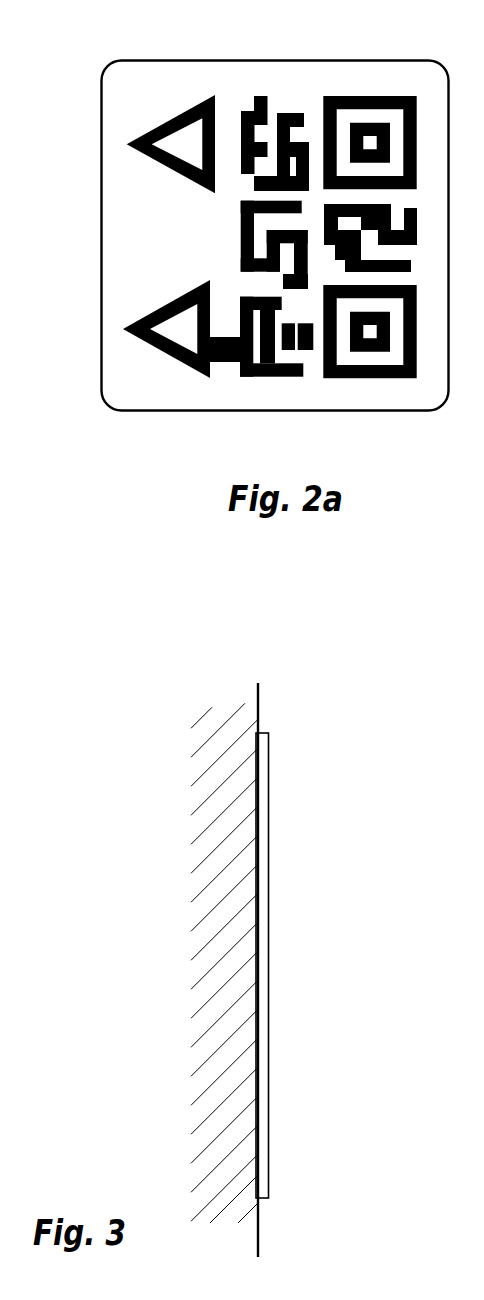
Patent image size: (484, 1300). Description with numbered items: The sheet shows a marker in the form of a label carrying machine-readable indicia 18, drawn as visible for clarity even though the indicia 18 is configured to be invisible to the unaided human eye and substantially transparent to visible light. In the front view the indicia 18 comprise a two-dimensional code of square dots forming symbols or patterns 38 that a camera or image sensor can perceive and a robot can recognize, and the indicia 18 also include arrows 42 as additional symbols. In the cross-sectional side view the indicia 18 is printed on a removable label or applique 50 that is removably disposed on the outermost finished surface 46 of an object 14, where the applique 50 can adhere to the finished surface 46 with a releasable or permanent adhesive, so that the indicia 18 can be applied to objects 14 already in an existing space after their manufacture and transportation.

In FIG. 3, the object 14 is at (210, 745).
In FIG. 2A, the indicia 18 is at (180, 430).
In FIG. 3, the indicia 18 is at (262, 805).
In FIG. 2A, the symbols or patterns 38 is at (366, 96).
In FIG. 2A, the arrows 42 is at (167, 117).
In FIG. 3, the finished surface 46 is at (259, 703).
In FIG. 2A, the applique 50 is at (102, 247).
In FIG. 3, the applique 50 is at (268, 920).